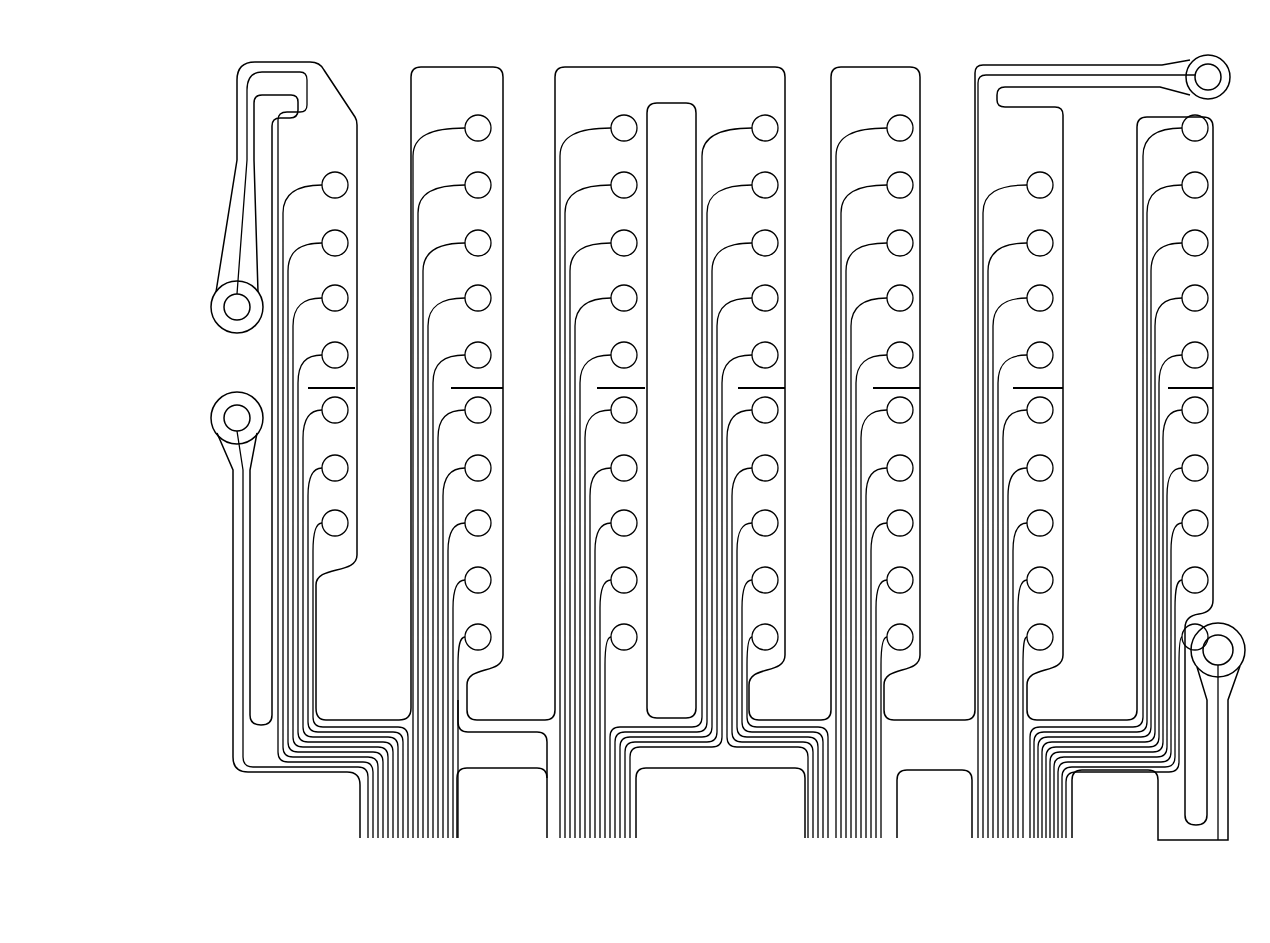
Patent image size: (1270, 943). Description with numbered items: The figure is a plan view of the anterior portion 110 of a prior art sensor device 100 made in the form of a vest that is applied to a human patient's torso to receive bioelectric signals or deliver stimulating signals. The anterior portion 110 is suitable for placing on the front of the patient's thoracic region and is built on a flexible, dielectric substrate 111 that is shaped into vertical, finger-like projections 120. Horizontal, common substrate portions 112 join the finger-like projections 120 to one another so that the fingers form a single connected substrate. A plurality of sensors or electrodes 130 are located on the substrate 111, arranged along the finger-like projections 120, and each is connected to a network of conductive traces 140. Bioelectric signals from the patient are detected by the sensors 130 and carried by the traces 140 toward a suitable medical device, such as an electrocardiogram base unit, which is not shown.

The sensor device 100 is at (198, 98).
The anterior portion 110 is at (227, 632).
The flexible, dielectric substrate 111 is at (410, 97).
The common substrate portions 112 is at (380, 720).
The finger-like projections 120 is at (464, 54).
The sensors or electrodes 130 is at (464, 124).
The conductive traces 140 is at (409, 659).